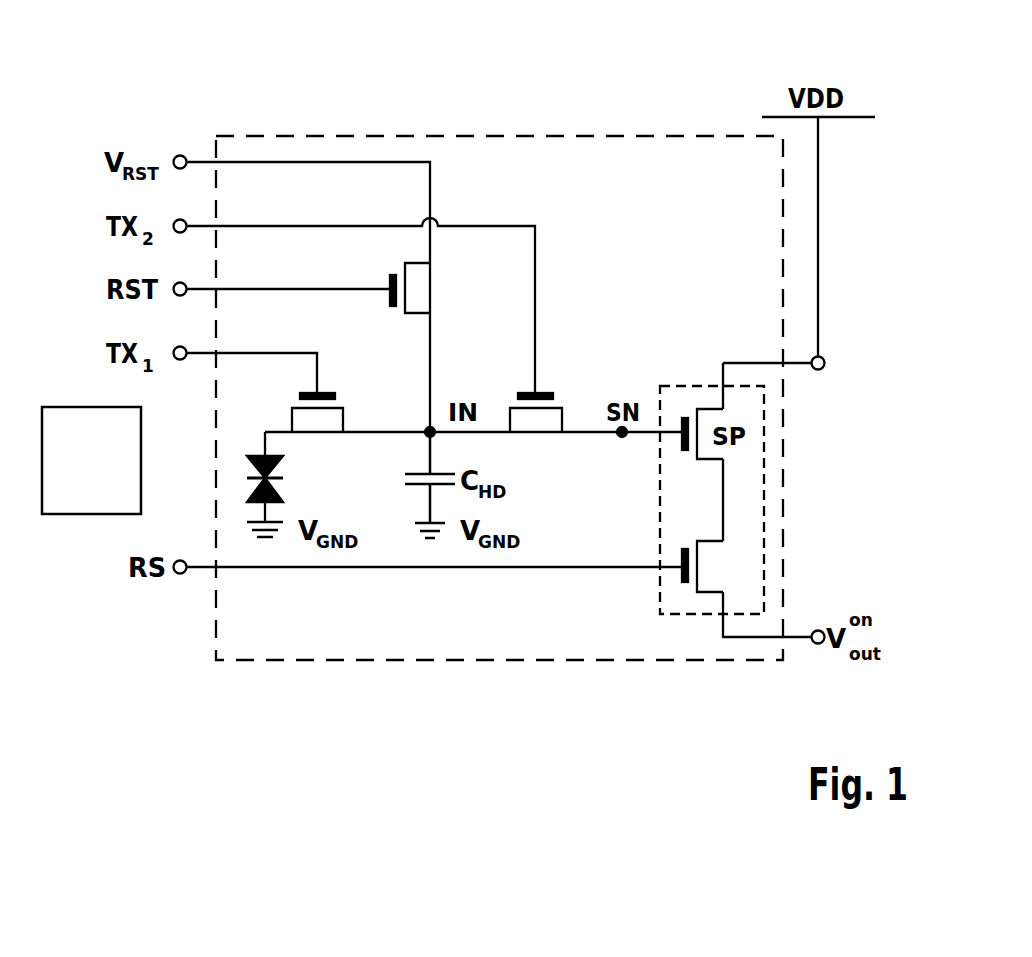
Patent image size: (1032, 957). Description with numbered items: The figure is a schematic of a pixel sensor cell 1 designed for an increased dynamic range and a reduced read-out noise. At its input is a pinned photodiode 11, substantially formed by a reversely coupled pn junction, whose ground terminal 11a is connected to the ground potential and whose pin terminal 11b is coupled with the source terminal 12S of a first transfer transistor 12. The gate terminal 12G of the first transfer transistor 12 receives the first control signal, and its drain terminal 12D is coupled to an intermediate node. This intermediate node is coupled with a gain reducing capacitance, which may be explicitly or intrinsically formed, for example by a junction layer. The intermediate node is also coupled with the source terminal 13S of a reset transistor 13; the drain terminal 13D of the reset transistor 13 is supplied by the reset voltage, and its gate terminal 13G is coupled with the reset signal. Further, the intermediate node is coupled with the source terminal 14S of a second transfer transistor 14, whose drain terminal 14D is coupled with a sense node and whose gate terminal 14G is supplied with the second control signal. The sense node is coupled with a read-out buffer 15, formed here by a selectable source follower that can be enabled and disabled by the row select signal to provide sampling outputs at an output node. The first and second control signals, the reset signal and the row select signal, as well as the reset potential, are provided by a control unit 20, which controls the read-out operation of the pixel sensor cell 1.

The pixel sensor cell 1 is at (535, 88).
The pinned photodiode 11 is at (302, 478).
The ground terminal 11a is at (258, 500).
The pin terminal 11b is at (258, 456).
The first transfer transistor 12 is at (346, 392).
The gate terminal 12G is at (294, 352).
The source terminal 12S is at (283, 430).
The drain terminal 12D is at (392, 430).
The reset transistor 13 is at (448, 288).
The gate terminal 13G is at (337, 288).
The drain terminal 13D is at (431, 243).
The source terminal 13S is at (431, 338).
The second transfer transistor 14 is at (562, 393).
The gate terminal 14G is at (537, 268).
The source terminal 14S is at (500, 436).
The drain terminal 14D is at (592, 436).
The read-out buffer 15 is at (765, 500).
The control unit 20 is at (106, 478).